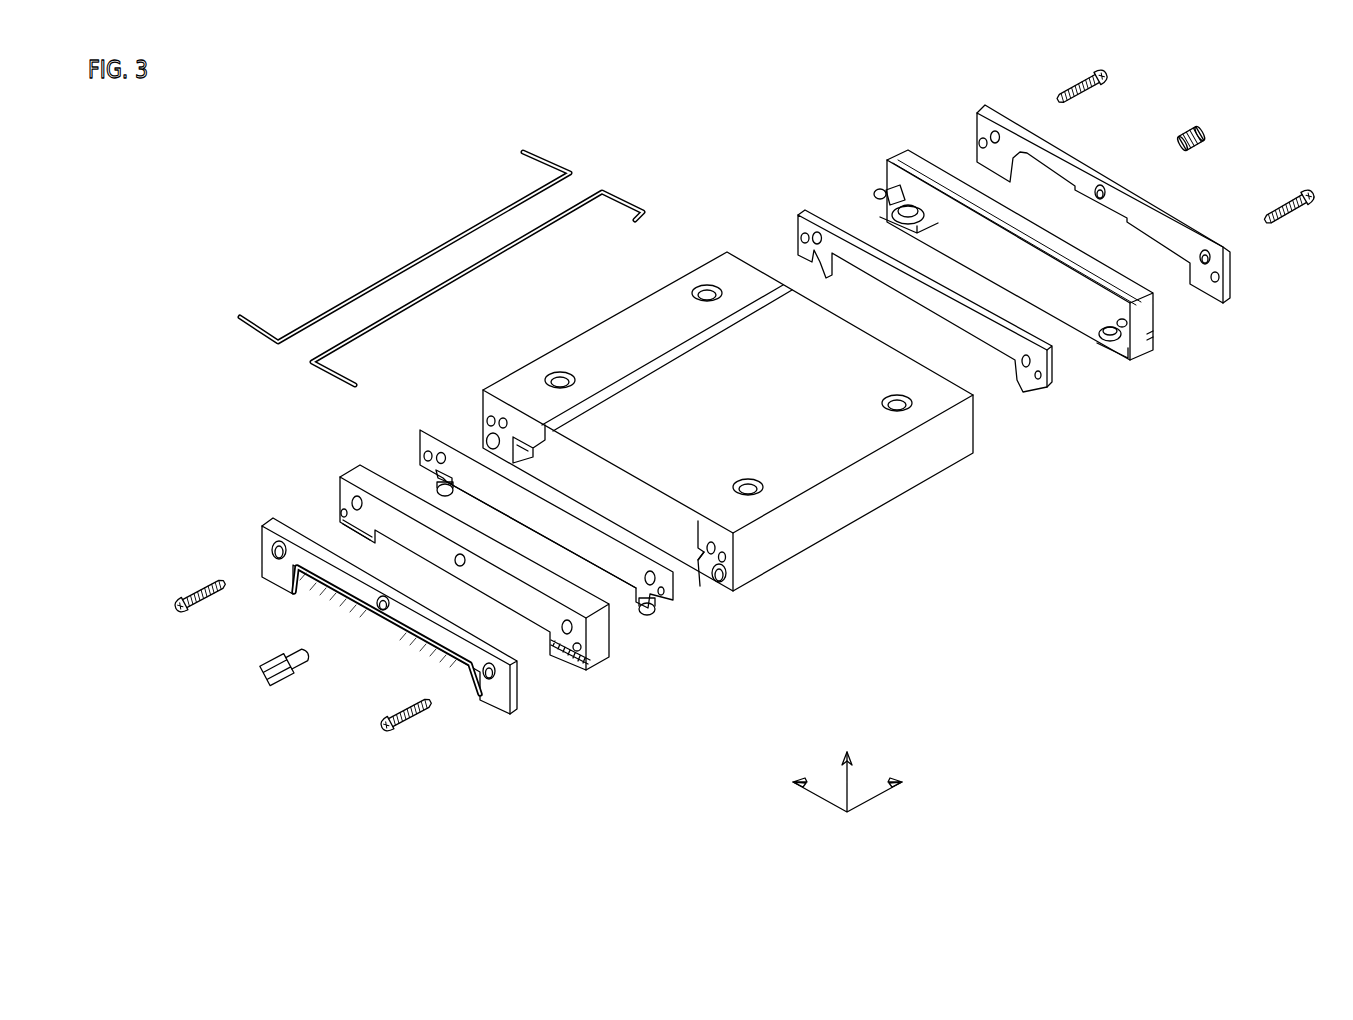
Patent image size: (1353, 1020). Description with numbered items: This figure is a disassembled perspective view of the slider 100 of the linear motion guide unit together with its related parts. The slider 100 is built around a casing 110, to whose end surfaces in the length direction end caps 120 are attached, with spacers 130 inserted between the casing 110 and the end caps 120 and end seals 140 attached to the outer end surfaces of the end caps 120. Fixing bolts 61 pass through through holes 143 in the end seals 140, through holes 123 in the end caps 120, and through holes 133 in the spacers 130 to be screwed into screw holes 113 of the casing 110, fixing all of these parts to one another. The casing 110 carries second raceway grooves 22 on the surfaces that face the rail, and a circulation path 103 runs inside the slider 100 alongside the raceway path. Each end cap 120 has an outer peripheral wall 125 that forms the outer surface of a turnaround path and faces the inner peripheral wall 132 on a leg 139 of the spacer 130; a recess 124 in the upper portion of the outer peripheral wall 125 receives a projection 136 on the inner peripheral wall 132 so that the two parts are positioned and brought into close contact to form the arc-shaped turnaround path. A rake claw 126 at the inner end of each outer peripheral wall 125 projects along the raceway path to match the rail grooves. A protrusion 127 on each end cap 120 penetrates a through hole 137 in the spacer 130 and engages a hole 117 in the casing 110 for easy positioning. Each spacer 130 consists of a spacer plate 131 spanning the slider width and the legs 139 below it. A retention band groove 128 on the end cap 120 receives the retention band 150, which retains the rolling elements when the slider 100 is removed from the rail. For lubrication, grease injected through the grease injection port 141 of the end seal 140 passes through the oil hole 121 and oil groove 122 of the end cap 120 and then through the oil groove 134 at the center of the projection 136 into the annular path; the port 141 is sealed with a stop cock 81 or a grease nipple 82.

The slider 100 is at (981, 607).
The casing 110 is at (870, 488).
The screw holes 113 is at (483, 400).
The holes 117 is at (753, 590).
The circulation path 103 is at (728, 586).
The second raceway grooves 22 is at (512, 440).
The end caps 120 is at (605, 650).
The oil hole 121 is at (460, 553).
The oil groove 122 is at (905, 190).
The through holes 123 is at (342, 505).
The recess 124 is at (1103, 337).
The outer peripheral wall 125 is at (877, 210).
The rake claw 126 is at (1088, 338).
The protrusion 127 is at (615, 630).
The retention band groove 128 is at (580, 662).
The spacers 130 is at (703, 590).
The spacer plate 131 is at (457, 450).
The inner peripheral wall 132 is at (655, 615).
The through holes 133 is at (442, 476).
The oil groove 134 is at (423, 453).
The projection 136 is at (665, 590).
The through holes 137 is at (720, 605).
The legs 139 is at (710, 690).
The end seals 140 is at (492, 700).
The grease injection port 141 is at (375, 615).
The through holes 143 is at (270, 546).
The retention band 150 is at (545, 163).
The fixing bolts 61 is at (182, 616).
The stop cock 81 is at (1195, 125).
The grease nipple 82 is at (268, 676).